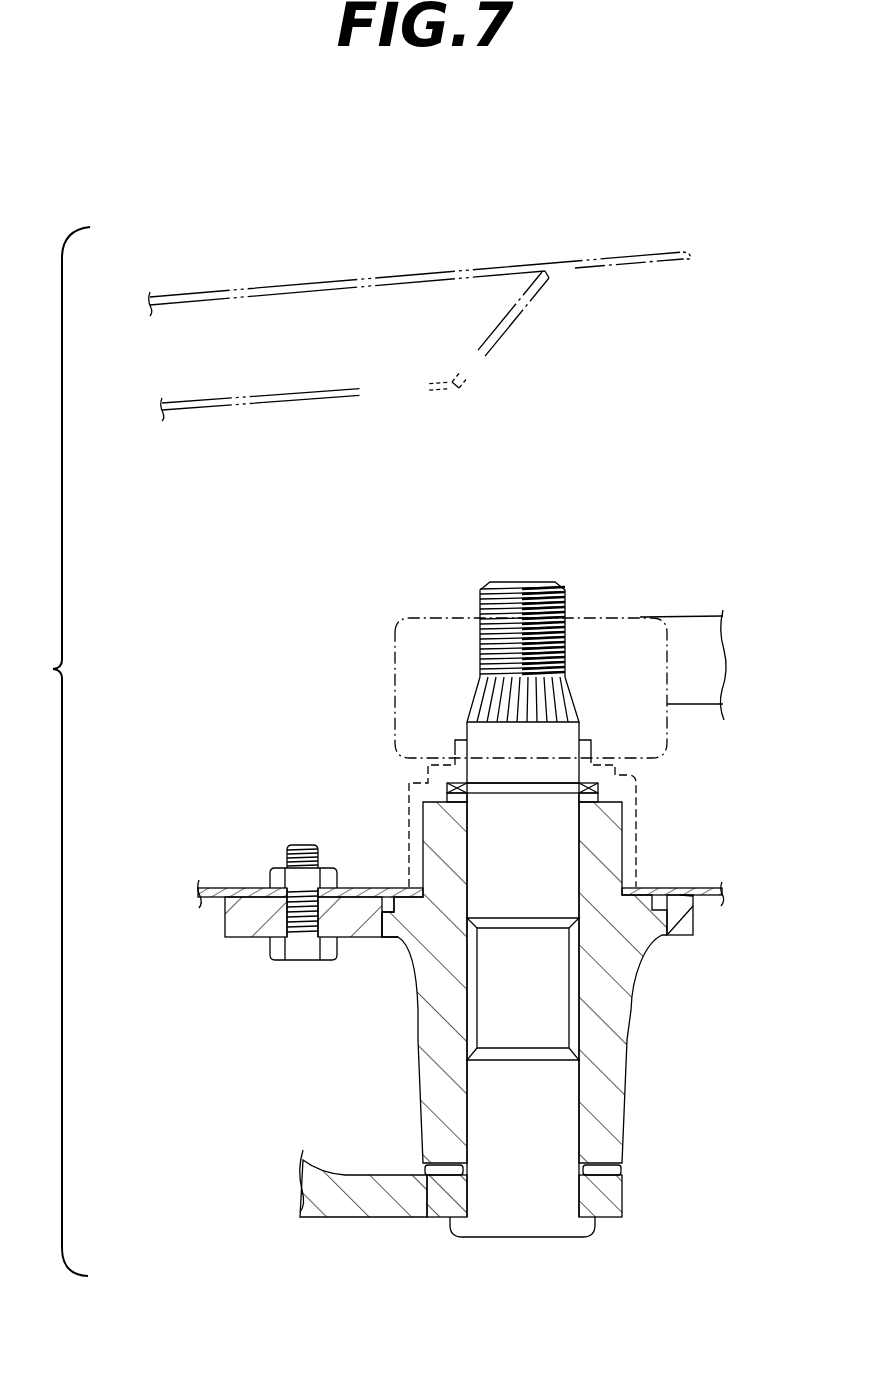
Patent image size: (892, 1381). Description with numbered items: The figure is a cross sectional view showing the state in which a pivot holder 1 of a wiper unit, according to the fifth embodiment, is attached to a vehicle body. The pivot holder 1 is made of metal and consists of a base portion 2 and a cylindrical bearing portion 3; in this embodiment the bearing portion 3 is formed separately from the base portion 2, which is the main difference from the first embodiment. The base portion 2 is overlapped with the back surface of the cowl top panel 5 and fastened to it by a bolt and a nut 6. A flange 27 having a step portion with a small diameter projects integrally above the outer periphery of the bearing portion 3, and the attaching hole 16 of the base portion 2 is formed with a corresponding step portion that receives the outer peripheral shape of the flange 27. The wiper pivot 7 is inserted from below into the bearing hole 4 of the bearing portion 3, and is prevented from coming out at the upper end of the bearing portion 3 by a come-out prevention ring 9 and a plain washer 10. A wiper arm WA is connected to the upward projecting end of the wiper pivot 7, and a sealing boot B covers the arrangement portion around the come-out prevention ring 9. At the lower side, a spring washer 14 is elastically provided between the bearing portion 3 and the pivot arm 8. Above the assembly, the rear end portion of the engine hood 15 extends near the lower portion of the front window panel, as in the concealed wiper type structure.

The pivot holder 1 is at (665, 1059).
The base portion 2 is at (225, 930).
The bearing portion 3 is at (415, 1053).
The bearing hole 4 is at (478, 1020).
The cowl top panel 5 is at (213, 888).
The bolt and nut 6 is at (270, 872).
The wiper pivot 7 is at (568, 582).
The pivot arm 8 is at (346, 1218).
The come-out prevention ring 9 is at (448, 785).
The plain washer 10 is at (449, 797).
The spring washer 14 is at (427, 1178).
The engine hood 15 is at (508, 262).
The attaching hole 16 is at (665, 940).
The flange 27 is at (398, 940).
The wiper arm WA is at (440, 618).
The sealing boot B is at (409, 845).